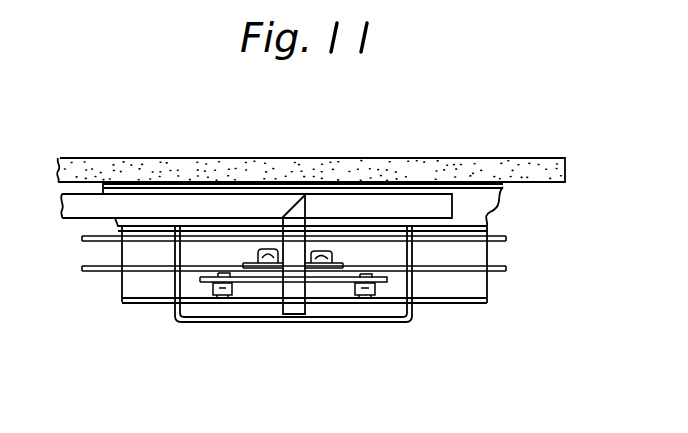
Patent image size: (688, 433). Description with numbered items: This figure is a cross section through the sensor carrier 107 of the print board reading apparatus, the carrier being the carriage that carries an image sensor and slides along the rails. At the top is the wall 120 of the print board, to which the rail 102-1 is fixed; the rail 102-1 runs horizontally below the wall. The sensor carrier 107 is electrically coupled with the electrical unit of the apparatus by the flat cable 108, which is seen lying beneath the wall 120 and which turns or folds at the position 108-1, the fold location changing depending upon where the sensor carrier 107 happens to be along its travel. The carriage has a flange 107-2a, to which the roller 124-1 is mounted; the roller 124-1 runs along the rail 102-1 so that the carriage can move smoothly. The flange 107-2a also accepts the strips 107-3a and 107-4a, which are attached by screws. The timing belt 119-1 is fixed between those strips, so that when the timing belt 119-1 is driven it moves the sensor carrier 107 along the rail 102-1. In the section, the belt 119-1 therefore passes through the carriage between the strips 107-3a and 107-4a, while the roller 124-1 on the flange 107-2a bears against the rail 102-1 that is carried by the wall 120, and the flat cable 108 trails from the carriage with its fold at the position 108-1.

The wall 120 is at (545, 173).
The flat cable 108 is at (387, 206).
The fold position of flat cable 108-1 is at (445, 200).
The rail 102-1 is at (478, 292).
The timing belt 119-1 is at (508, 269).
The sensor carrier 107 is at (255, 325).
The strip 107-4a is at (248, 254).
The strip 107-3a is at (328, 275).
The flange 107-2a is at (200, 278).
The roller 124-1 is at (210, 298).